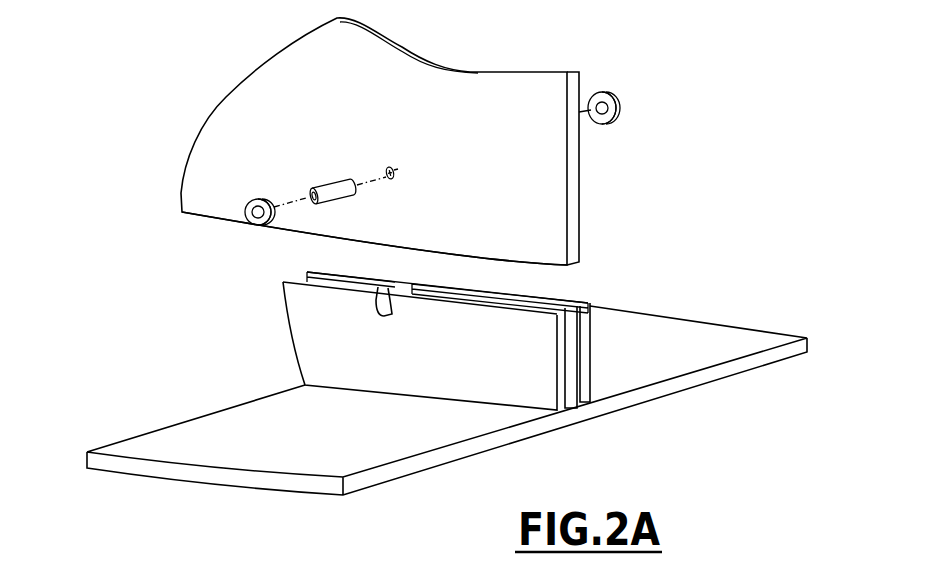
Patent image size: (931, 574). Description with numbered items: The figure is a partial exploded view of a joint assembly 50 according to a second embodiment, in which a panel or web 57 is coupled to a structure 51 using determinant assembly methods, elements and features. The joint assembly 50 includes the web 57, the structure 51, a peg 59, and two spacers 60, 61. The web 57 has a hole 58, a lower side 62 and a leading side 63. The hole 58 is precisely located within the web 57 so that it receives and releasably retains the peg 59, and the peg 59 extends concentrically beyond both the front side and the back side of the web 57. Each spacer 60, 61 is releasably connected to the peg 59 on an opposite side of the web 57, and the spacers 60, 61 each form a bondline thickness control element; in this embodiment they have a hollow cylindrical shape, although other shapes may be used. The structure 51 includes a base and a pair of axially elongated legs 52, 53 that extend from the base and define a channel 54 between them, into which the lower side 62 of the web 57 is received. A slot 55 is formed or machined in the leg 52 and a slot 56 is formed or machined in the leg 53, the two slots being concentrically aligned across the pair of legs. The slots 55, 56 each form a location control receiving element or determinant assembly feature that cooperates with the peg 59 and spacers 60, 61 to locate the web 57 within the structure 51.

The joint assembly 50 is at (132, 327).
The structure 51 is at (248, 413).
The leg 52 is at (563, 372).
The leg 53 is at (590, 348).
The channel 54 is at (558, 292).
The slot 55 is at (376, 315).
The slot 56 is at (407, 288).
The web 57 is at (536, 82).
The hole 58 is at (396, 167).
The peg 59 is at (338, 198).
The spacer 60 is at (253, 226).
The spacer 61 is at (614, 122).
The lower side 62 is at (538, 262).
The leading side 63 is at (590, 162).